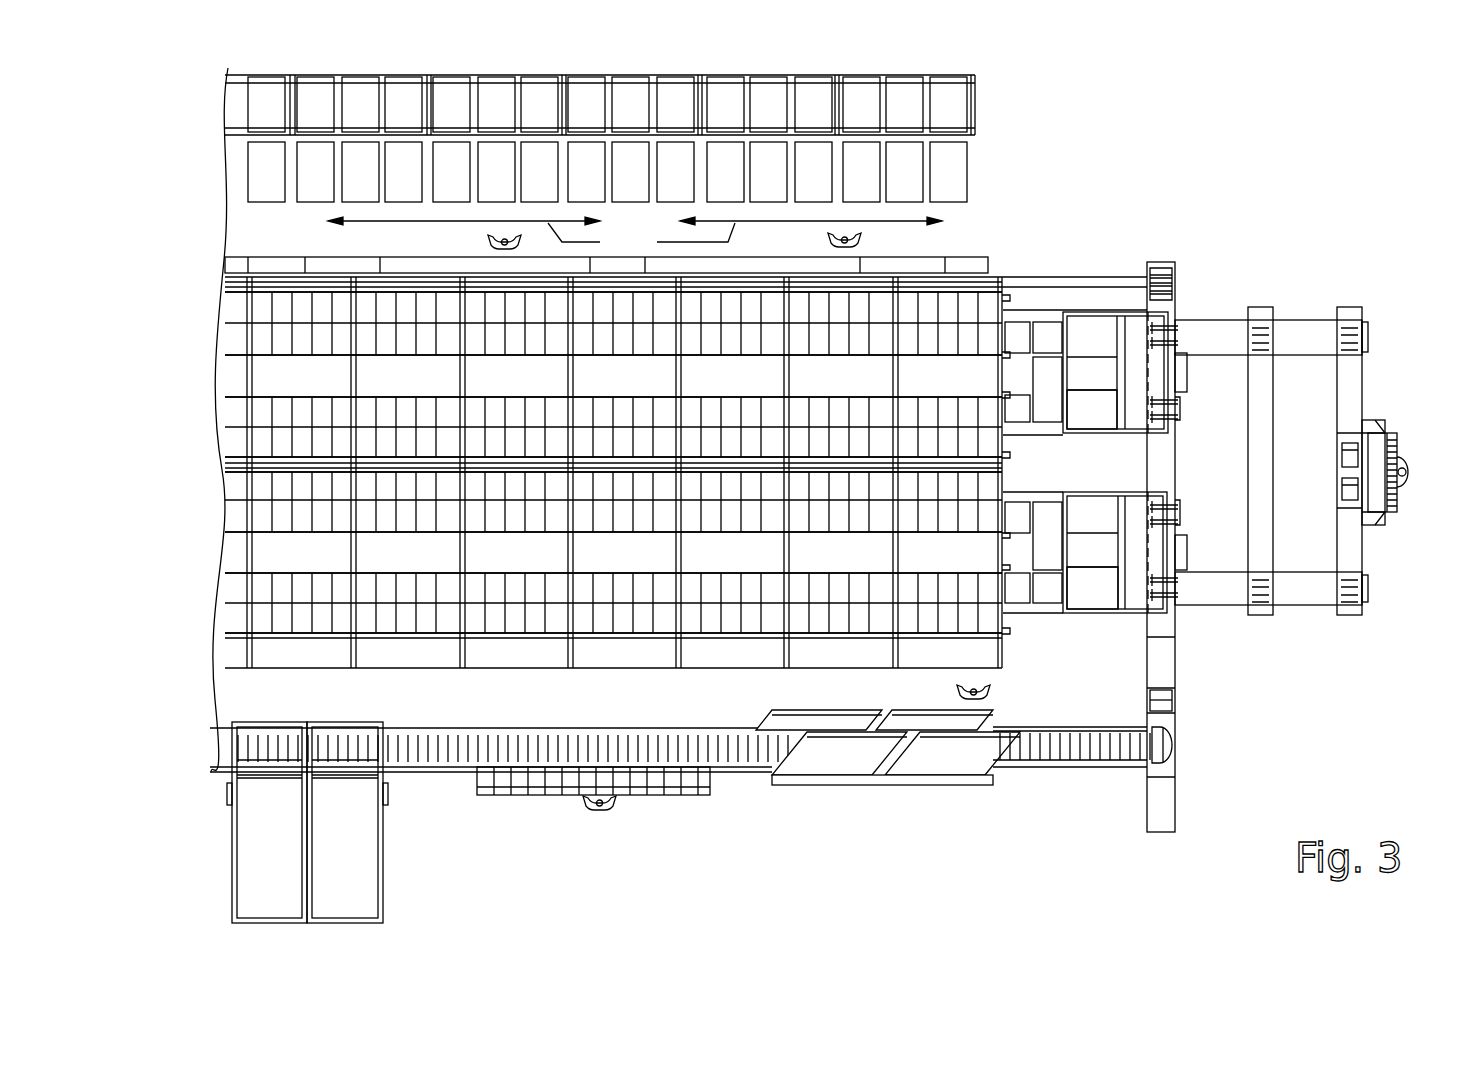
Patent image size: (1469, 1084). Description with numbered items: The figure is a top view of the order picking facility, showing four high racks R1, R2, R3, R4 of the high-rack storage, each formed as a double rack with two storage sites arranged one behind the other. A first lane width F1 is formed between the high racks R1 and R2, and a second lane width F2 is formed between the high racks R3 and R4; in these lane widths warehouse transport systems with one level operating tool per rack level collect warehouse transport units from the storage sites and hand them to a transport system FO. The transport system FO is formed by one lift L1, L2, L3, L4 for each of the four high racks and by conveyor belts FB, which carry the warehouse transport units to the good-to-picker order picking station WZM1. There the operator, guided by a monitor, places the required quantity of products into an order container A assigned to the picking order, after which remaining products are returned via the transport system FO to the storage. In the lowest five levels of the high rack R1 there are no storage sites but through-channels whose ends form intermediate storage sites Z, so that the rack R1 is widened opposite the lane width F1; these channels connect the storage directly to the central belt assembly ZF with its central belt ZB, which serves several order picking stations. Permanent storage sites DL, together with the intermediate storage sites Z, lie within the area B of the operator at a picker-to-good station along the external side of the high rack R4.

The permanent storage sites DL is at (990, 178).
The intermediate storage sites Z is at (266, 189).
The area B is at (635, 235).
The order container A is at (955, 270).
The high rack R4 is at (200, 323).
The second lane width F2 is at (635, 370).
The high rack R3 is at (204, 430).
The high rack R2 is at (195, 500).
The first lane width F1 is at (563, 568).
The high rack R1 is at (193, 620).
The lift L4 is at (1088, 337).
The lift L3 is at (1090, 418).
The lift L2 is at (1100, 513).
The lift L1 is at (1105, 588).
The transport system FO is at (1302, 494).
The conveyor belts FB is at (1213, 338).
The good-to-picker order picking station WZM1 is at (1400, 455).
The central belt assembly ZF is at (200, 750).
The central belt ZB is at (1062, 740).